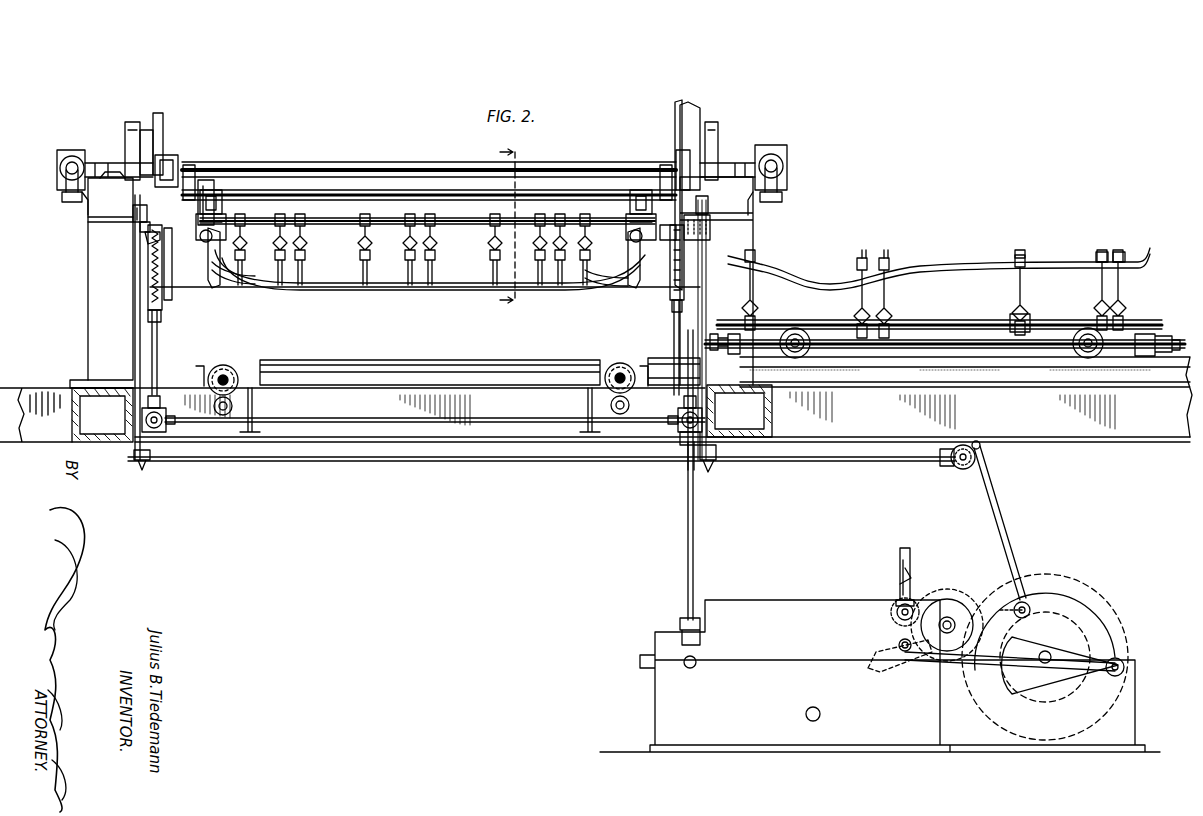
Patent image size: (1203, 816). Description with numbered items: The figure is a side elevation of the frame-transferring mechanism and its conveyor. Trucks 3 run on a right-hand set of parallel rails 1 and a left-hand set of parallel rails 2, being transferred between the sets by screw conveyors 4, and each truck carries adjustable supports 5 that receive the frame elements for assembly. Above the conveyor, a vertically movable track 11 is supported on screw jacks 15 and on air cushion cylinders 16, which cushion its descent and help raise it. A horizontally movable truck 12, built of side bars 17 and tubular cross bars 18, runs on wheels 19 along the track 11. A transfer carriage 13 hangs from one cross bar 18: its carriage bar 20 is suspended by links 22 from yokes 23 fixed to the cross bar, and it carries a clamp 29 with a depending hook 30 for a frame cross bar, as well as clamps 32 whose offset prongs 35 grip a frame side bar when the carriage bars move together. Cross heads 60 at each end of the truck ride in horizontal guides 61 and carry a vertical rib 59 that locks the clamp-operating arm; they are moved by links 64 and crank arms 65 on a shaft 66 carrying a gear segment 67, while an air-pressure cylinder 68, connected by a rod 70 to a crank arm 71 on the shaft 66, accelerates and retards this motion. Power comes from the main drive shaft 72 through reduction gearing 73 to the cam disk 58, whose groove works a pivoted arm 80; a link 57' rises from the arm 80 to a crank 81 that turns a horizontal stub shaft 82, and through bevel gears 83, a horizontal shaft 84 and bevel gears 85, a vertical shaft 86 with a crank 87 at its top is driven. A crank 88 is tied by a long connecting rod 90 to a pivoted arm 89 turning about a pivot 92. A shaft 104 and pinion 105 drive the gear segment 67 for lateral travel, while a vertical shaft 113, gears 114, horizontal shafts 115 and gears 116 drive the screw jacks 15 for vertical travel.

The right-hand set of parallel rails 1 is at (1186, 346).
The left-hand set of parallel rails 2 is at (656, 360).
The truck 3 is at (1138, 304).
The screw conveyor 4 is at (225, 365).
The adjustable support 5 is at (862, 284).
The vertically movable track 11 is at (146, 236).
The horizontally movable truck 12 is at (206, 180).
The transfer carriage 13 is at (456, 246).
The screw jack 15 is at (158, 344).
The air cushion cylinder 16 is at (172, 262).
The side bar 17 is at (189, 166).
The tubular cross bar 18 is at (338, 220).
The wheel 19 is at (134, 208).
The carriage bar 20 is at (376, 226).
The link 22 is at (228, 216).
The yoke 23 is at (222, 192).
The clamp 29 is at (240, 236).
The depending hook 30 is at (218, 262).
The clamp 32 is at (304, 248).
The prong 35 is at (278, 250).
The link 57' is at (1006, 523).
The cam disk 58 is at (1112, 615).
The vertical rib 59 is at (163, 116).
The cross head 60 is at (146, 128).
The horizontal guide 61 is at (126, 124).
The link 64 is at (118, 160).
The crank arm 65 is at (170, 156).
The shaft 66 is at (350, 166).
The gear segment 67 is at (676, 104).
The air-pressure cylinder 68 is at (70, 150).
The rod 70 is at (66, 200).
The crank arm 71 is at (84, 205).
The main drive shaft 72 is at (898, 562).
The reduction gearing 73 is at (960, 598).
The pivoted arm 80 is at (1000, 608).
The crank 81 is at (982, 446).
The horizontal stub shaft 82 is at (964, 470).
The bevel gears 83 is at (950, 466).
The horizontal shaft 84 is at (800, 462).
The bevel gears 85 is at (146, 468).
The vertical shaft 86 is at (136, 336).
The crank 87 is at (140, 226).
The crank 88 is at (1117, 656).
The pivoted arm 89 is at (884, 645).
The connecting rod 90 is at (1012, 672).
The pivot 92 is at (806, 716).
The shaft 104 is at (688, 340).
The pinion 105 is at (710, 232).
The vertical shaft 113 is at (688, 466).
The gears 114 is at (684, 440).
The horizontal shaft 115 is at (142, 412).
The gears 116 is at (166, 412).